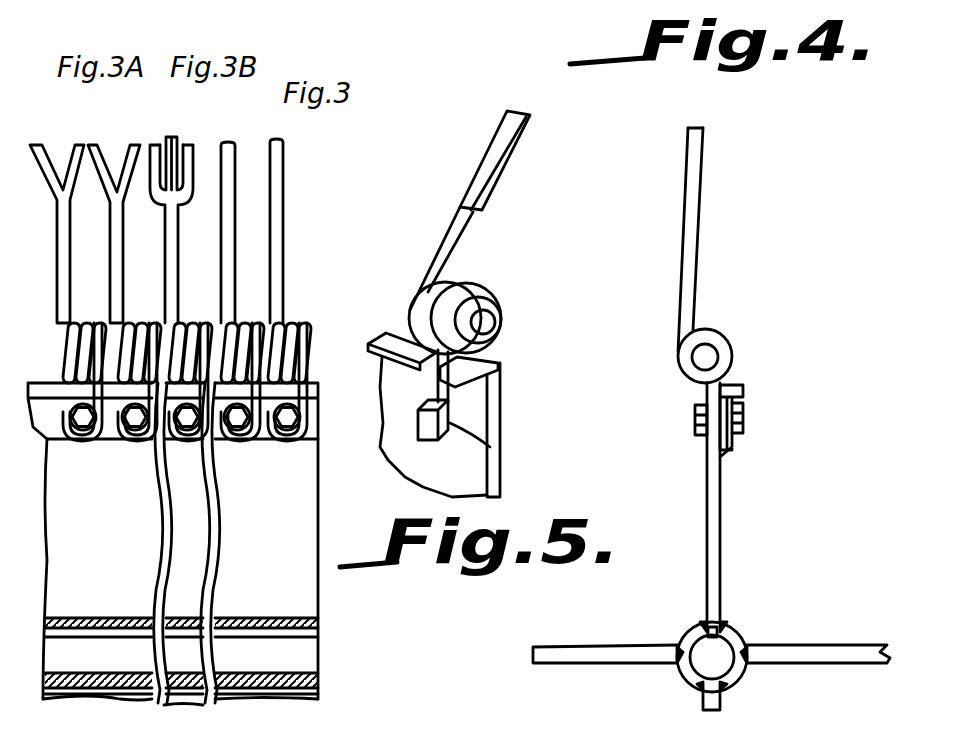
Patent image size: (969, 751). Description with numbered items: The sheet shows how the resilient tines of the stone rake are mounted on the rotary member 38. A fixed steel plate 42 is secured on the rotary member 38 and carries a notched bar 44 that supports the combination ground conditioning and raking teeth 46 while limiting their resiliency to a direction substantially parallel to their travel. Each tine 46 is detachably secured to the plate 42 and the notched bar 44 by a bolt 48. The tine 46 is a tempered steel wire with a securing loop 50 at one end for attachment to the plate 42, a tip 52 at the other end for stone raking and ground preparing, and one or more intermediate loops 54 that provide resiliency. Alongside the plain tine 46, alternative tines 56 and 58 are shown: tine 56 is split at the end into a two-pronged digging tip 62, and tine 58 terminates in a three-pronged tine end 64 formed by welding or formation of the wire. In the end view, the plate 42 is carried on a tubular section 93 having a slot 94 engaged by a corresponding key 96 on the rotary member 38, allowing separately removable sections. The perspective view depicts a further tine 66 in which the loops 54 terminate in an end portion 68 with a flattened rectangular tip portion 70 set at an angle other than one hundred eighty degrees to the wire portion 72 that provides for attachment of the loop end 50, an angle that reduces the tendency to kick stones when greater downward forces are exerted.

In FIG. 4, the rotary member 38 is at (723, 643).
In FIG. 3, the plate 42 is at (277, 593).
In FIG. 5, the plate 42 is at (500, 450).
In FIG. 4, the plate 42 is at (847, 645).
In FIG. 3, the notched bar 44 is at (310, 384).
In FIG. 5, the notched bar 44 is at (477, 417).
In FIG. 4, the notched bar 44 is at (740, 387).
In FIG. 3, the tine 46 is at (277, 257).
In FIG. 4, the tine 46 is at (697, 245).
In FIG. 3, the bolt 48 is at (300, 420).
In FIG. 5, the bolt 48 is at (423, 427).
In FIG. 4, the bolt 48 is at (745, 415).
In FIG. 5, the securing loop 50 is at (493, 470).
In FIG. 4, the securing loop 50 is at (707, 452).
In FIG. 4, the tip 52 is at (703, 128).
In FIG. 3, the loop 54 is at (298, 326).
In FIG. 5, the loop 54 is at (500, 313).
In FIG. 4, the loop 54 is at (723, 338).
In FIG. 3A, the tine 56 is at (110, 208).
In FIG. 3, the tine 58 is at (177, 213).
In FIG. 3A, the two-pronged digging tip 62 is at (110, 143).
In FIG. 3B, the three-pronged tine end 64 is at (170, 140).
In FIG. 5, the tine 66 is at (445, 237).
In FIG. 5, the end portion 68 is at (467, 227).
In FIG. 5, the tip portion 70 is at (530, 115).
In FIG. 5, the wire portion 72 is at (453, 397).
In FIG. 4, the tubular section 93 is at (737, 680).
In FIG. 4, the slot 94 is at (717, 630).
In FIG. 4, the key 96 is at (723, 647).